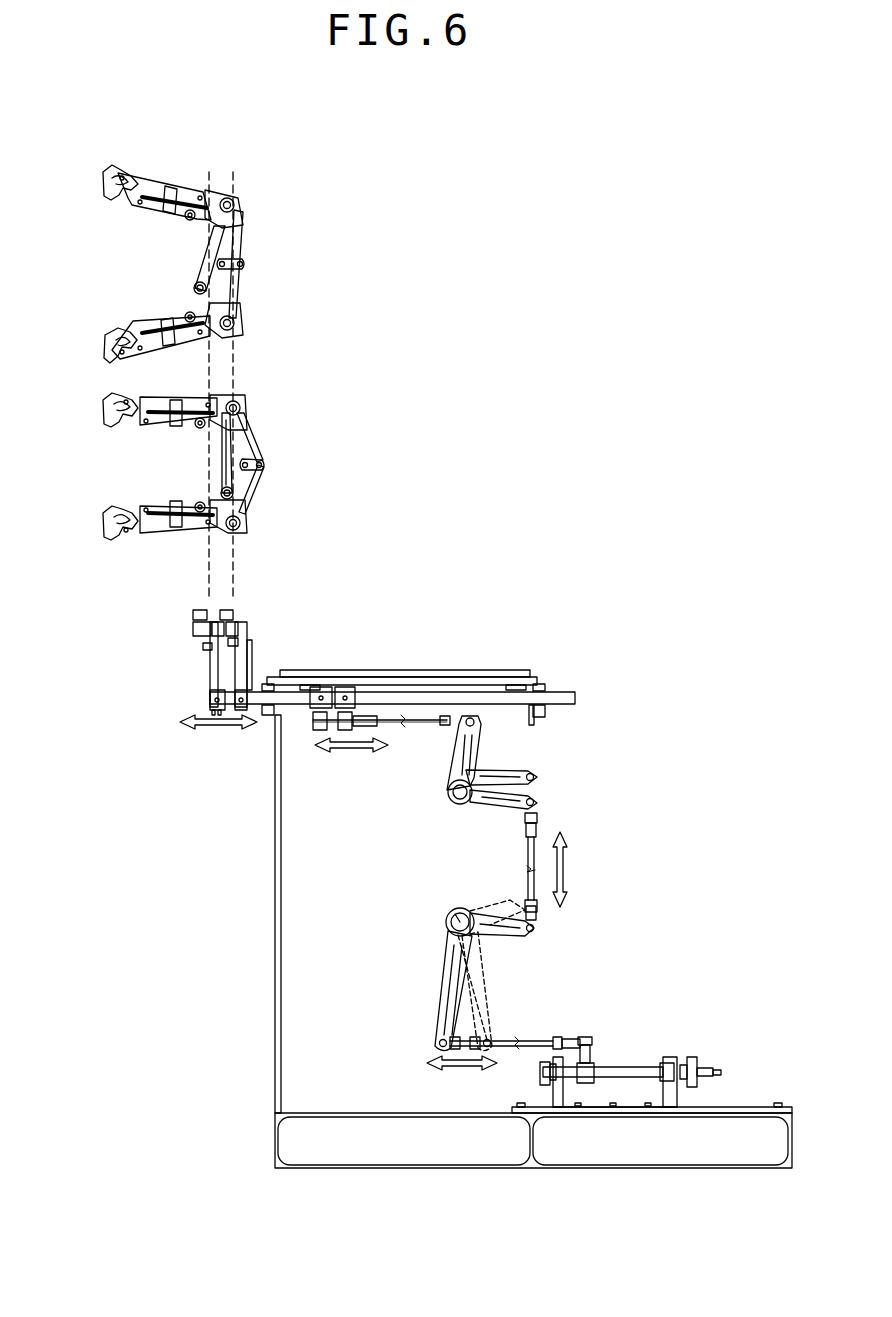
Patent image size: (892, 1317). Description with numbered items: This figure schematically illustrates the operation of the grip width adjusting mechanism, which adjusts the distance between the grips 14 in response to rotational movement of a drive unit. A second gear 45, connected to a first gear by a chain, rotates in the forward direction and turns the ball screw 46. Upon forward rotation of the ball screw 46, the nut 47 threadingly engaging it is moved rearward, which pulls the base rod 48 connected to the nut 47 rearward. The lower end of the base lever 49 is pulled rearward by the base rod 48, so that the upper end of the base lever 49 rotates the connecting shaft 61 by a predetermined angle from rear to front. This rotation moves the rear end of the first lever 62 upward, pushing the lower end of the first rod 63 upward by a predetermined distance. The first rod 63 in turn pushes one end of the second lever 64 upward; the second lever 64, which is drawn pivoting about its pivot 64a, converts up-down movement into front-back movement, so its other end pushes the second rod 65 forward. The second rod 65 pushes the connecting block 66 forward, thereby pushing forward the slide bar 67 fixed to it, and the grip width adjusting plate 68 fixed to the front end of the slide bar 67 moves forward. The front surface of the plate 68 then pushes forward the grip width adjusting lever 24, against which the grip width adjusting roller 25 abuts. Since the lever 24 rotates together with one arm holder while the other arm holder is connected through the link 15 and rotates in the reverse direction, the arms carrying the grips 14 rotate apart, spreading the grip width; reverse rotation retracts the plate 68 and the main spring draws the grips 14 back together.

The grip 14 is at (107, 177).
The grip width adjusting lever 24 is at (207, 250).
The grip width adjusting roller 25 is at (199, 287).
The link 15 is at (244, 264).
The grip width adjusting plate 68 is at (233, 643).
The slide bar 67 is at (427, 696).
The connecting block 66 is at (345, 693).
The second rod 65 is at (407, 730).
The second lever 64 is at (474, 762).
The lever pivot shaft 64a is at (457, 794).
The first rod 63 is at (531, 875).
The connecting shaft 61 is at (452, 911).
The first lever 62 is at (522, 933).
The base lever 49 is at (447, 985).
The base rod 48 is at (525, 1039).
The nut 47 is at (587, 1037).
The ball screw 46 is at (630, 1072).
The second gear 45 is at (694, 1064).